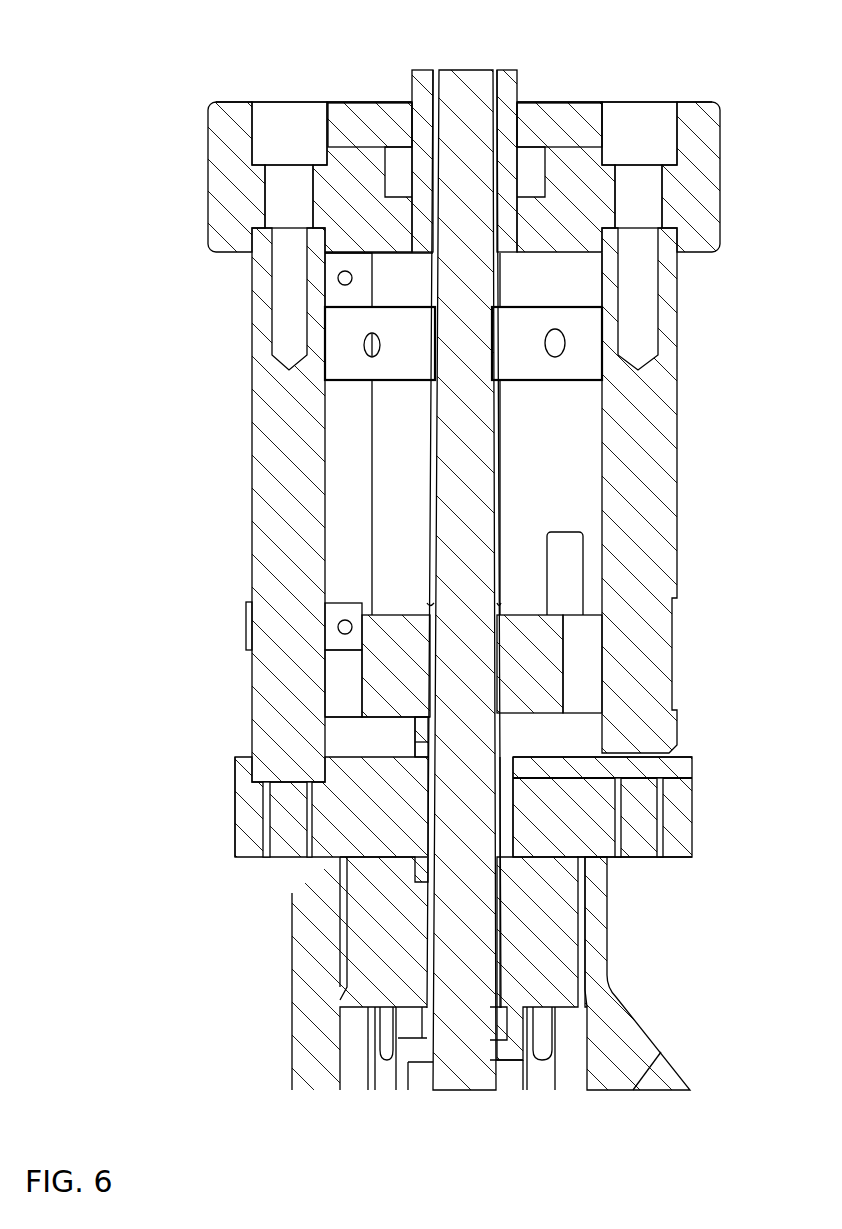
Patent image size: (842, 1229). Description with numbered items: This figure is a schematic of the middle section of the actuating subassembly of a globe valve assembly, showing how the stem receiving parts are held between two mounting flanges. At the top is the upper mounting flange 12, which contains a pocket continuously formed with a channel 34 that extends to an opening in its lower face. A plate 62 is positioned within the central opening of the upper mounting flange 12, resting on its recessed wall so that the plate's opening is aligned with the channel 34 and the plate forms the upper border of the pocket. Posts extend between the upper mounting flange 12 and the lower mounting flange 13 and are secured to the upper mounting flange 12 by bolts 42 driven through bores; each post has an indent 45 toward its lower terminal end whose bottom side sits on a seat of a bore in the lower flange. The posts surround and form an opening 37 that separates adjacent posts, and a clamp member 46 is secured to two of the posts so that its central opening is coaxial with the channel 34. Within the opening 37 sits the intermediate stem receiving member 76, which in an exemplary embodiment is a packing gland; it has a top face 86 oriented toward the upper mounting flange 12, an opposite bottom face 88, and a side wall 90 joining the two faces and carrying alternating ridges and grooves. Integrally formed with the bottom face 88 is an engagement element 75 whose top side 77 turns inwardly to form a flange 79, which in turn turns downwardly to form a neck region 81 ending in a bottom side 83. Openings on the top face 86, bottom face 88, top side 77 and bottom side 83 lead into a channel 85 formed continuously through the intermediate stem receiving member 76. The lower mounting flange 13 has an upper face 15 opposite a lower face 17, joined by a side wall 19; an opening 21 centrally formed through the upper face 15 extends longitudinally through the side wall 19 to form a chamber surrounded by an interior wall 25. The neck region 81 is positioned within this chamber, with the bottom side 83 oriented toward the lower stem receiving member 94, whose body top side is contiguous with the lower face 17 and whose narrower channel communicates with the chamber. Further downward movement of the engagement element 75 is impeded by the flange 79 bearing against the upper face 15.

The upper mounting flange 12 is at (736, 150).
The lower mounting flange 13 is at (708, 809).
The upper face 15 is at (690, 752).
The lower face 17 is at (684, 855).
The side wall 19 is at (233, 832).
The opening 21 is at (513, 750).
The interior wall 25 is at (400, 860).
The channel 34 is at (497, 250).
The opening 37 is at (572, 481).
The bolts 42 is at (288, 122).
The indent 45 is at (675, 633).
The clamp member 46 is at (596, 378).
The plate 62 is at (367, 125).
The engagement element 75 is at (526, 782).
The intermediate stem receiving member 76 is at (596, 612).
The top side 77 is at (515, 712).
The flange 79 is at (412, 735).
The neck region 81 is at (415, 742).
The bottom side 83 is at (513, 815).
The channel 85 is at (505, 797).
The top face 86 is at (397, 612).
The bottom face 88 is at (368, 718).
The side wall 90 is at (370, 670).
The lower stem receiving member 94 is at (556, 973).